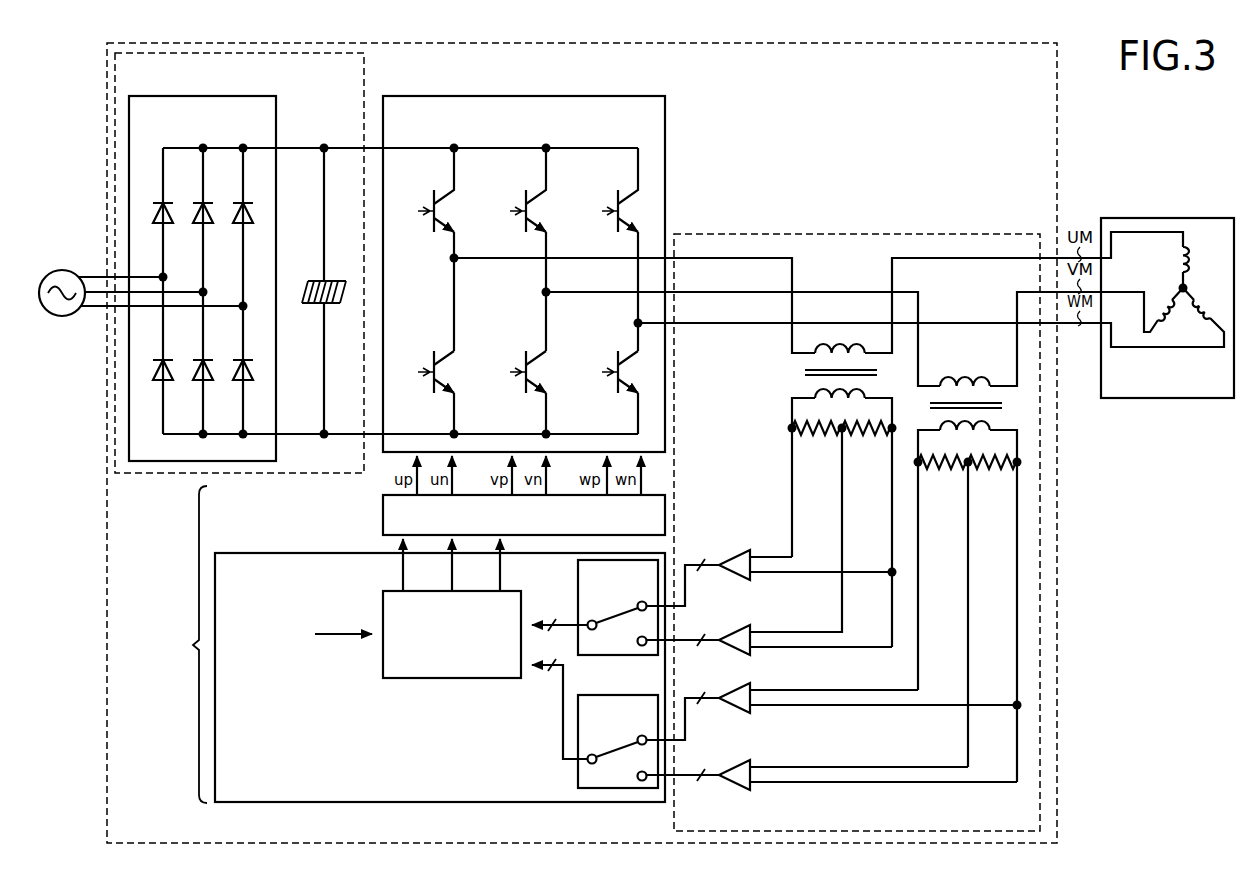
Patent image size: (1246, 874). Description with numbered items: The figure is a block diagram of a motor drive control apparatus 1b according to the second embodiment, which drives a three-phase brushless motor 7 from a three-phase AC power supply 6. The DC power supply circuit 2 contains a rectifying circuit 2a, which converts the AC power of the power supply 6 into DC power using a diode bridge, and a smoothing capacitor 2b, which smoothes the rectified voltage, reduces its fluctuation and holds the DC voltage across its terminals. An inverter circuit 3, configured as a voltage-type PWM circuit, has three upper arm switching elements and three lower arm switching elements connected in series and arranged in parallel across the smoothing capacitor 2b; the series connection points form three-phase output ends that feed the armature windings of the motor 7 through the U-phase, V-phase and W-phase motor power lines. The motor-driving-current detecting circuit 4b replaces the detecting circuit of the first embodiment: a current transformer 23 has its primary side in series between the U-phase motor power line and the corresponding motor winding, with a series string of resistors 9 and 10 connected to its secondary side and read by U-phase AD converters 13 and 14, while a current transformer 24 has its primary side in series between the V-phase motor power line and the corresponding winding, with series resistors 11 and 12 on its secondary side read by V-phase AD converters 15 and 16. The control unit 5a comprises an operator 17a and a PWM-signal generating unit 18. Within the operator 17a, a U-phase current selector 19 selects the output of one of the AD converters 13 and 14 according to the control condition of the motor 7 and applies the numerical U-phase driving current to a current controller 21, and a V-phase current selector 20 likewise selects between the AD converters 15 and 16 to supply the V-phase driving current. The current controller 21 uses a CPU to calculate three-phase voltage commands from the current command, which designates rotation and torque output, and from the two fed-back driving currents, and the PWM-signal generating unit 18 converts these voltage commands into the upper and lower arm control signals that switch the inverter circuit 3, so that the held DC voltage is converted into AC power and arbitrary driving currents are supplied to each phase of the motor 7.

The motor drive control apparatus 1b is at (107, 817).
The DC power supply circuit 2 is at (364, 75).
The rectifying circuit 2a is at (276, 113).
The smoothing capacitor 2b is at (305, 280).
The inverter circuit 3 is at (665, 113).
The motor-driving-current detecting circuit 4b is at (671, 812).
The control unit 5a is at (160, 644).
The power supply 6 is at (64, 270).
The motor 7 is at (1195, 218).
The resistor for U-phase current detection 9 is at (868, 436).
The resistor for U-phase current detection 10 is at (818, 436).
The resistor for V-phase current detection 11 is at (993, 470).
The resistor for V-phase current detection 12 is at (945, 470).
The U-phase AD converter 13 is at (750, 633).
The U-phase AD converter 14 is at (728, 557).
The V-phase AD converter 15 is at (750, 768).
The V-phase AD converter 16 is at (750, 691).
The operator 17a is at (252, 553).
The PWM-signal generating unit 18 is at (383, 513).
The U-phase current selector 19 is at (626, 655).
The V-phase current selector 20 is at (580, 695).
The current controller 21 is at (465, 678).
The current transformer 23 is at (826, 346).
The current transformer 24 is at (950, 381).